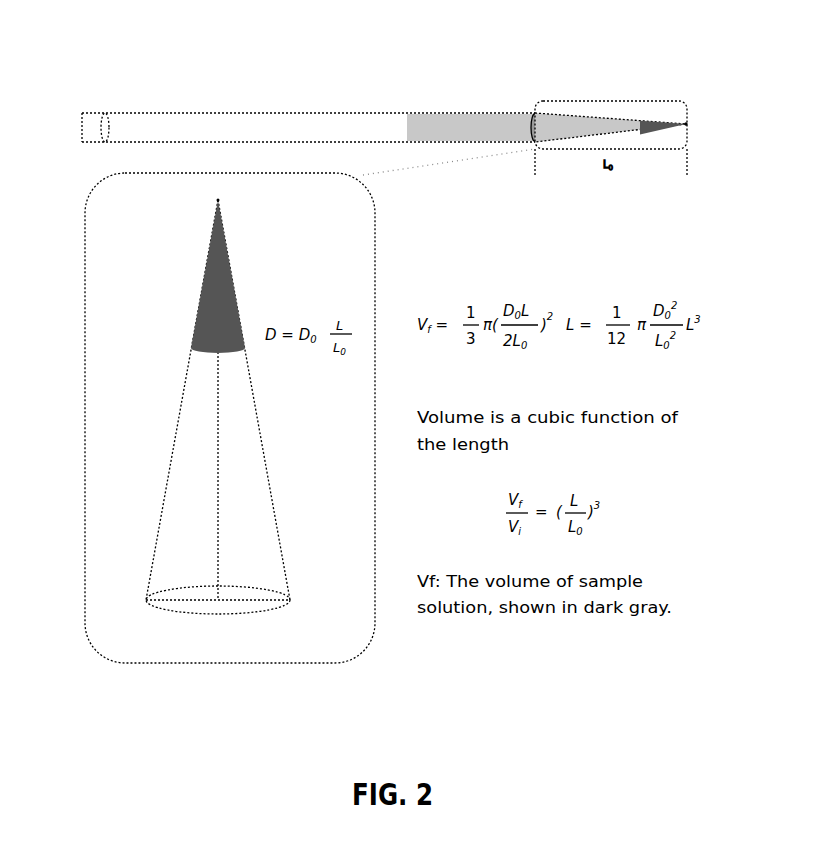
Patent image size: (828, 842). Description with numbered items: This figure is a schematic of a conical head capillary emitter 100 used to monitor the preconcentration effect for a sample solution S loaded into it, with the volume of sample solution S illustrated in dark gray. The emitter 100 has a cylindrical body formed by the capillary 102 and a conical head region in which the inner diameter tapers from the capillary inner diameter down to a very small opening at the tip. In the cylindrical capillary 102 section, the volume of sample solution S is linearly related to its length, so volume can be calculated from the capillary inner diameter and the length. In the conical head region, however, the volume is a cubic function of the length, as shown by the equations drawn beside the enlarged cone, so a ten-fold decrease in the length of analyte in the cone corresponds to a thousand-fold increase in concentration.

The emitter 100 is at (132, 41).
The capillary 102 is at (308, 97).
The sample solution S is at (473, 164).